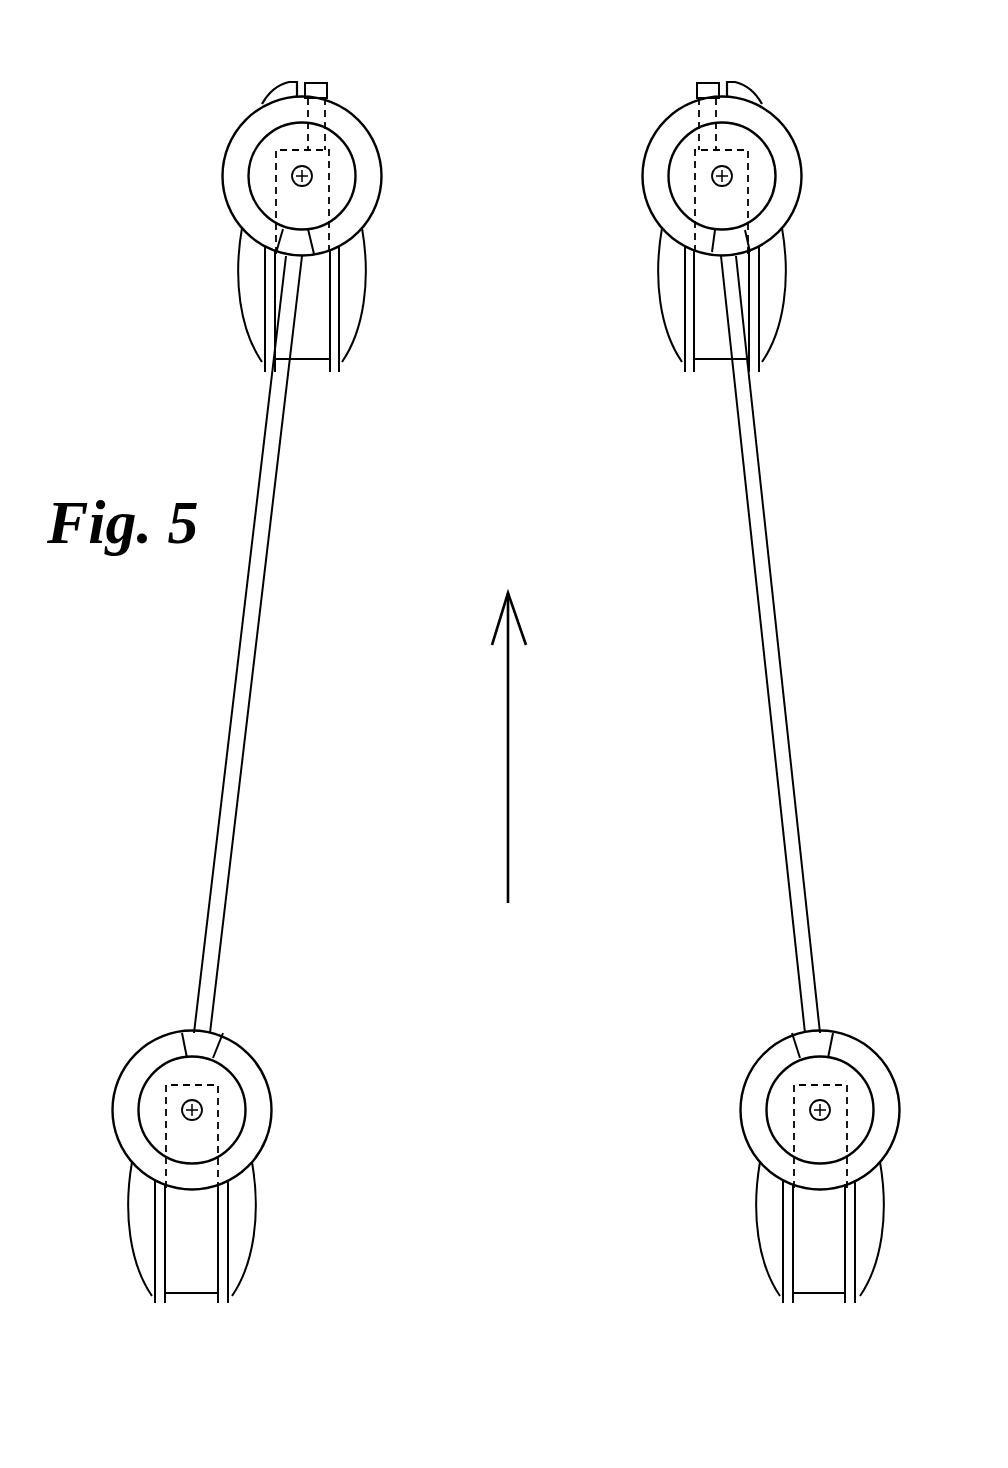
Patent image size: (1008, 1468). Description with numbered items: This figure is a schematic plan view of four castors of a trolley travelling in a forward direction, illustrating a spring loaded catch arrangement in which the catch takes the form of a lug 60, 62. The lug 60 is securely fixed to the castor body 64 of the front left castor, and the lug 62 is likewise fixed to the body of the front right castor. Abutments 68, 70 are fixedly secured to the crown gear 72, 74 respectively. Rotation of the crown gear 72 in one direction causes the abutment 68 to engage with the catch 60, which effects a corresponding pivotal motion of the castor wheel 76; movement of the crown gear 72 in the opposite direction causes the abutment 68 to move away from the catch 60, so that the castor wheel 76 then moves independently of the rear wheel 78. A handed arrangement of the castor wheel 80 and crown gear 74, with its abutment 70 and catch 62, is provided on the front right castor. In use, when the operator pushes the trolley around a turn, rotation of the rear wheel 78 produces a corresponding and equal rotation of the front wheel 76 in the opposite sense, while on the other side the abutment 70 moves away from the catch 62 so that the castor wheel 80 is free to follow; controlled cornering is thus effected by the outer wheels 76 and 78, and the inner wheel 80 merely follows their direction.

The lug 60 is at (322, 88).
The lug 62 is at (703, 88).
The castor body 64 is at (330, 198).
The abutment 68 is at (277, 95).
The abutment 70 is at (750, 92).
The crown gear 72 is at (227, 205).
The crown gear 74 is at (803, 175).
The castor wheel 76 is at (340, 310).
The rear wheel 78 is at (230, 1222).
The castor wheel 80 is at (760, 293).